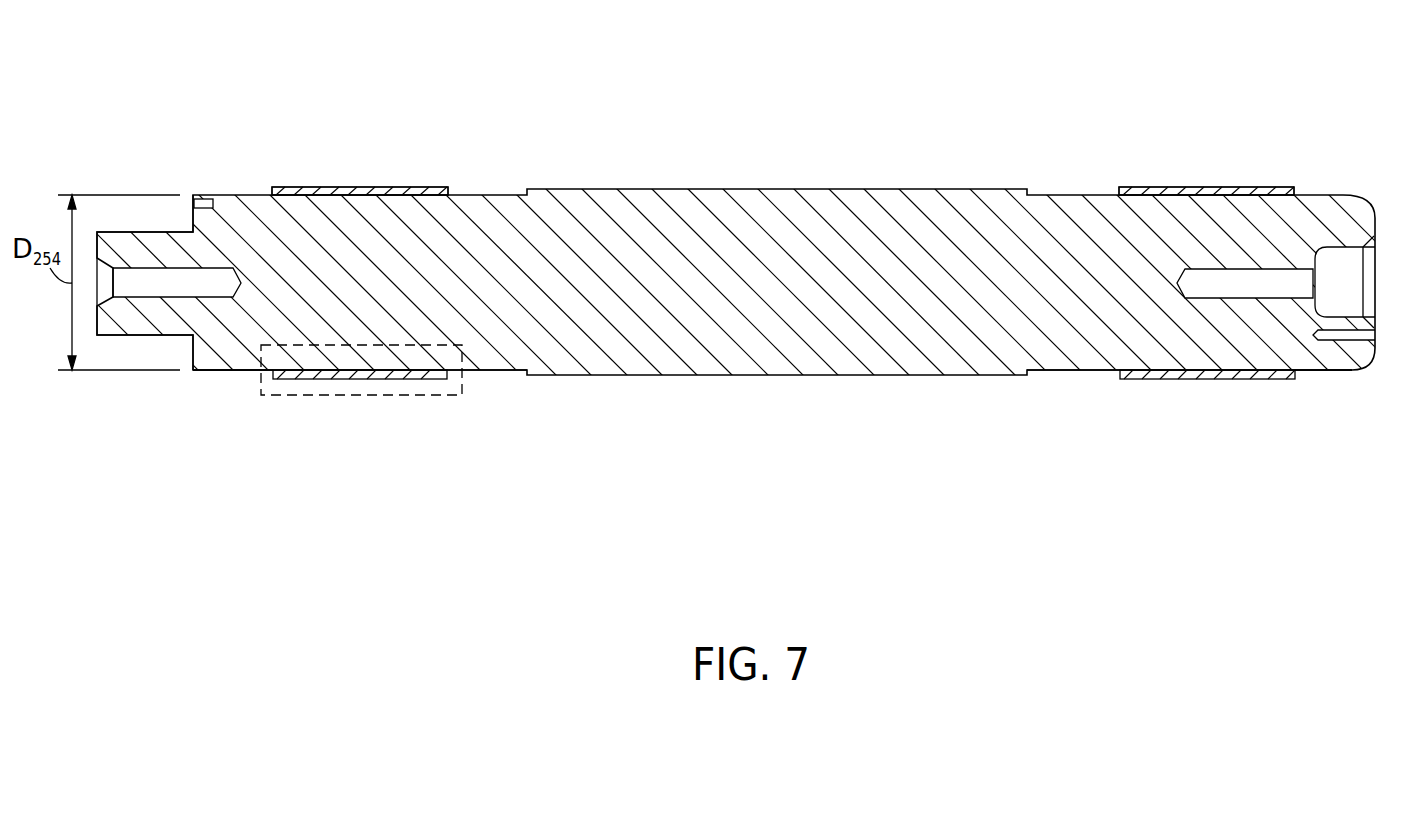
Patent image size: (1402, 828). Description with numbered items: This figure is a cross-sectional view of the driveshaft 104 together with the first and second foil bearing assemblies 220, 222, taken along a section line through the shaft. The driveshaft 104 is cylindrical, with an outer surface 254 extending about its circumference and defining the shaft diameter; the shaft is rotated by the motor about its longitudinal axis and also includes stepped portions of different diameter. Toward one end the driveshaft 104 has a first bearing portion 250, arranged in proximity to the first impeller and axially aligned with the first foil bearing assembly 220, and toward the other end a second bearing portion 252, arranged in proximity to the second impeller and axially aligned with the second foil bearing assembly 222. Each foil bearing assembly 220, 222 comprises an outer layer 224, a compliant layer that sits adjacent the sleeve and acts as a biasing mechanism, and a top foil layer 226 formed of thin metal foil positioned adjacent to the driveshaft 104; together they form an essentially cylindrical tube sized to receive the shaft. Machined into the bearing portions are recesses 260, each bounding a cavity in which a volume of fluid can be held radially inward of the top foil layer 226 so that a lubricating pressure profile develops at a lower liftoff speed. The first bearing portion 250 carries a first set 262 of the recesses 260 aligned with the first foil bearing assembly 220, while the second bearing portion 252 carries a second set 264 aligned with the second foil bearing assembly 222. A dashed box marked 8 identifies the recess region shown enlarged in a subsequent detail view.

The driveshaft 104 is at (733, 243).
The first foil bearing assembly 220 is at (318, 152).
The second foil bearing assembly 222 is at (1269, 137).
The outer layer 224 is at (410, 192).
The top foil layer 226 is at (378, 192).
The first bearing portion 250 is at (373, 330).
The second bearing portion 252 is at (1260, 334).
The outer surface 254 is at (490, 372).
The recesses 260 is at (340, 392).
The first set of recesses 262 is at (248, 378).
The second set of recesses 264 is at (1312, 376).
The detail area of FIG. 8 is at (290, 398).